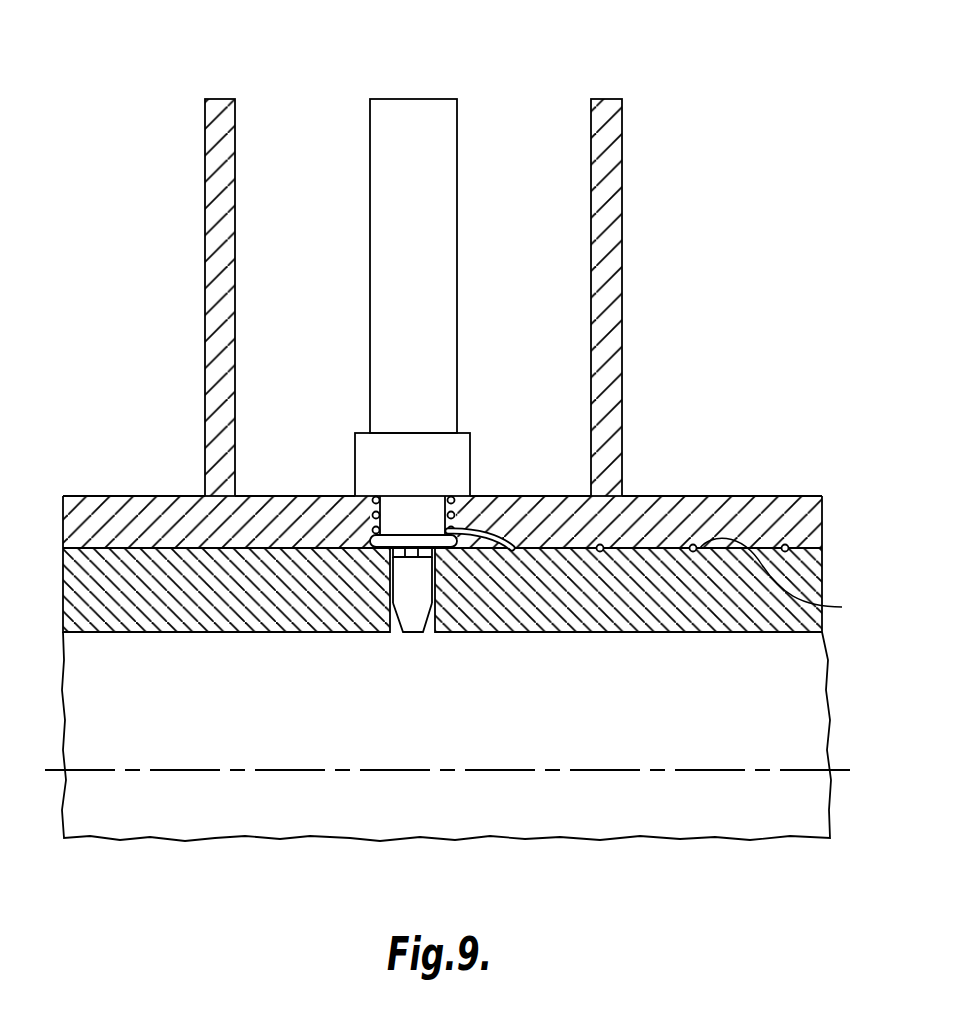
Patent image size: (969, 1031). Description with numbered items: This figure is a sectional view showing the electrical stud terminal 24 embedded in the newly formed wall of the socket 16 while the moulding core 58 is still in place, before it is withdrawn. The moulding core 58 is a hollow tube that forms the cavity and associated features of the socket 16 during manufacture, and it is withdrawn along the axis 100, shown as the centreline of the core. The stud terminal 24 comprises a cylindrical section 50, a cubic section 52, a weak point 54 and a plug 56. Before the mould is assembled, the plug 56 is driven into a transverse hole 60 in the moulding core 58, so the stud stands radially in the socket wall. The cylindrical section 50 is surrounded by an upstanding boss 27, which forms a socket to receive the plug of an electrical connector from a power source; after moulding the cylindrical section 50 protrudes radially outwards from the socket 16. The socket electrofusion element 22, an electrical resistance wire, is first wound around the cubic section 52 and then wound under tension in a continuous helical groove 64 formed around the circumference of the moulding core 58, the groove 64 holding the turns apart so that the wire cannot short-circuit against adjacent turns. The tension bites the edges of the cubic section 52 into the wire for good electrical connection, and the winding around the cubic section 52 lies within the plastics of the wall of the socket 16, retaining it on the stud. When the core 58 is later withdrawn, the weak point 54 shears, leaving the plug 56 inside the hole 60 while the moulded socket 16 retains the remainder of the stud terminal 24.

The socket 16 is at (172, 496).
The socket electrofusion element 22 is at (698, 545).
The electrical stud terminal 24 is at (439, 290).
The upstanding boss 27 is at (618, 137).
The cylindrical section 50 is at (418, 108).
The cubic section 52 is at (428, 500).
The weak point 54 is at (410, 555).
The plug 56 is at (423, 632).
The moulding core 58 is at (131, 626).
The transverse hole 60 is at (400, 632).
The helical groove 64 is at (782, 579).
The axis 100 is at (727, 770).